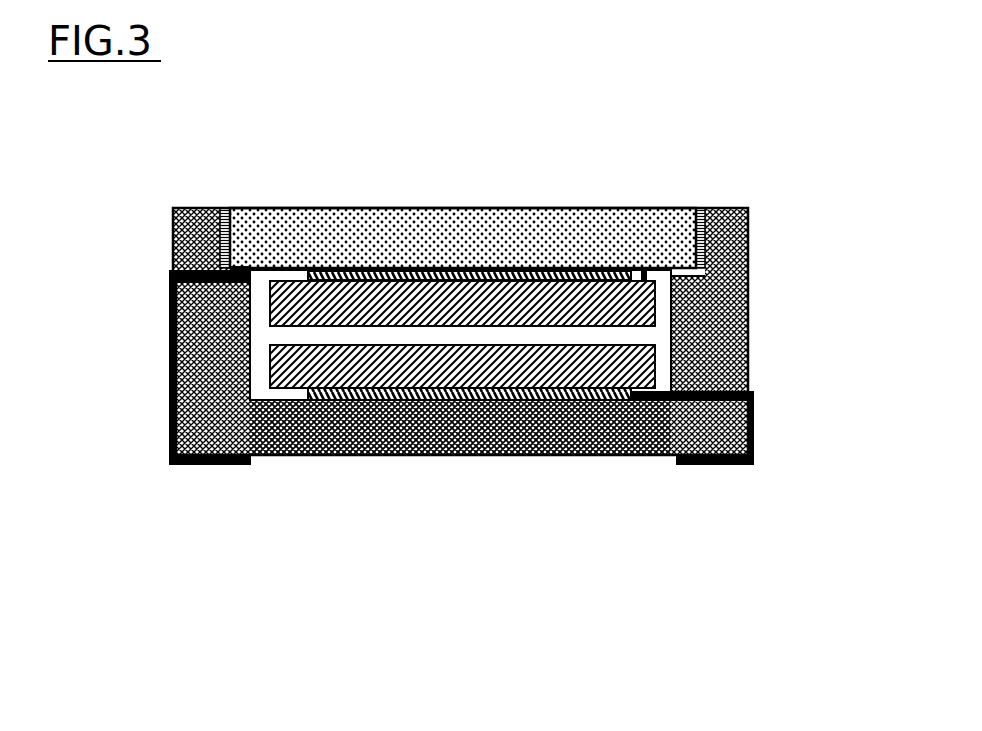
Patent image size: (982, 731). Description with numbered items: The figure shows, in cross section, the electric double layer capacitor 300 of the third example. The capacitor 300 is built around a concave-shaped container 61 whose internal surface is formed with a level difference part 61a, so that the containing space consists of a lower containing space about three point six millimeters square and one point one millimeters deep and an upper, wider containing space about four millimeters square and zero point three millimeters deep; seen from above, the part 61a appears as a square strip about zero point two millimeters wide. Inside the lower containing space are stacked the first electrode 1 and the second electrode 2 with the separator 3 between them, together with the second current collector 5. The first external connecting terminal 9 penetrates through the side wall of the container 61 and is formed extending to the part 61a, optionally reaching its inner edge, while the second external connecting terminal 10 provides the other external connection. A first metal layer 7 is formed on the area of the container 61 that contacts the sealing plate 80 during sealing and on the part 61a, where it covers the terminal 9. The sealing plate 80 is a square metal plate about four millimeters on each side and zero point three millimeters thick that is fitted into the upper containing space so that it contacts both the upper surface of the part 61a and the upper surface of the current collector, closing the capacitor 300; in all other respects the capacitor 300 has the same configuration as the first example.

The first electrode 1 is at (272, 303).
The second electrode 2 is at (285, 366).
The separator 3 is at (445, 323).
The second current collector 5 is at (390, 392).
The first metal layer 7 is at (212, 200).
The first external connecting terminal 9 is at (170, 456).
The second external connecting terminal 10 is at (745, 422).
The concave-shaped container 61 is at (467, 413).
The level difference part 61a is at (234, 248).
The sealing plate 80 is at (470, 225).
The electric double layer capacitor 300 is at (518, 641).